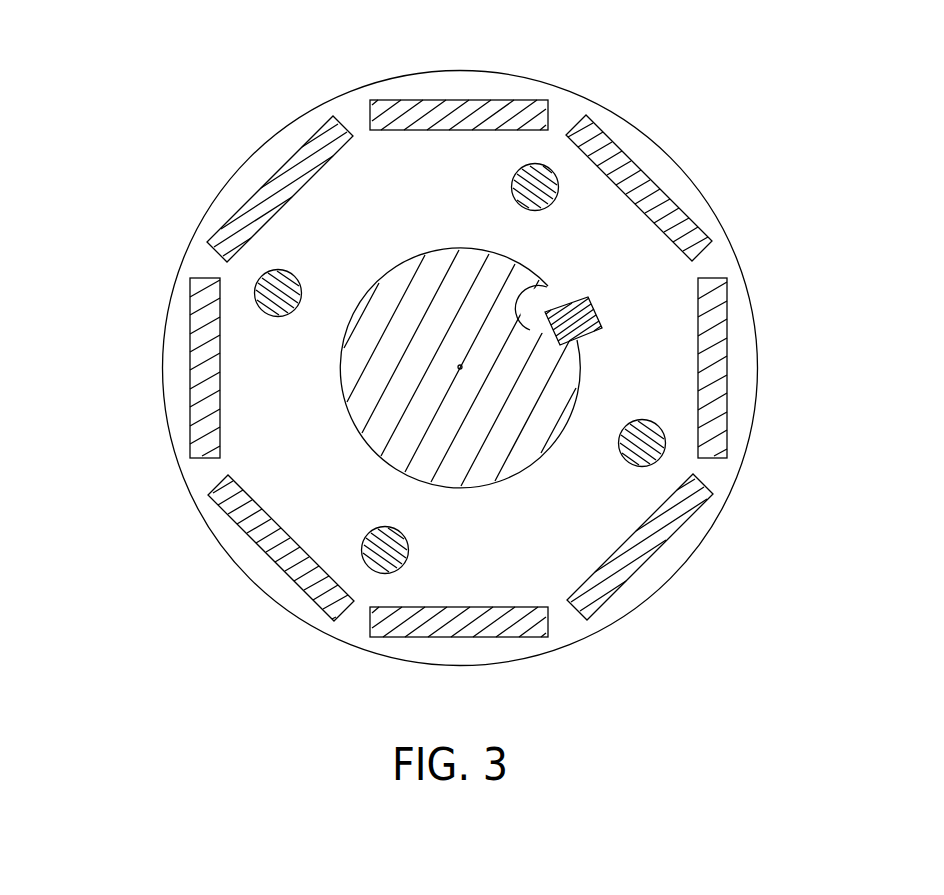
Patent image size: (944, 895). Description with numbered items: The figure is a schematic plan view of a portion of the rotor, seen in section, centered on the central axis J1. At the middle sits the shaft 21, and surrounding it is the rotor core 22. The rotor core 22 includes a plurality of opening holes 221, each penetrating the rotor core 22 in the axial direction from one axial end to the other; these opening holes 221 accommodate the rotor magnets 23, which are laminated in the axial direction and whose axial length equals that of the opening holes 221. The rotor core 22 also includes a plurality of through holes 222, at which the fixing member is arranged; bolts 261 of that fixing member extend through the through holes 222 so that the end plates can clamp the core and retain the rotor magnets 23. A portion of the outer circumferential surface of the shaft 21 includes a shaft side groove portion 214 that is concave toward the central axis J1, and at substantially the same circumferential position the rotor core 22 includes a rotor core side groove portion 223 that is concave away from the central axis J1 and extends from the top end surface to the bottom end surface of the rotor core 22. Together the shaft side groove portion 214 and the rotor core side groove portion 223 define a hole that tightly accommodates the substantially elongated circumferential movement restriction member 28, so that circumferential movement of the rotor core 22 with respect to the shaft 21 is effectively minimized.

The shaft 21 is at (430, 290).
The rotor core 22 is at (220, 153).
The rotor magnet 23 is at (482, 112).
The circumferential movement restriction member 28 is at (575, 345).
The shaft side groove portion 214 is at (528, 298).
The opening hole 221 is at (455, 100).
The through hole 222 is at (512, 190).
The rotor core side groove portion 223 is at (603, 313).
The bolt 261 is at (545, 175).
The central axis J1 is at (458, 369).